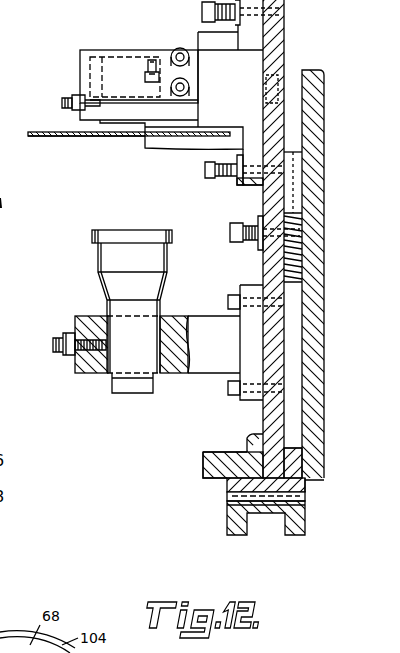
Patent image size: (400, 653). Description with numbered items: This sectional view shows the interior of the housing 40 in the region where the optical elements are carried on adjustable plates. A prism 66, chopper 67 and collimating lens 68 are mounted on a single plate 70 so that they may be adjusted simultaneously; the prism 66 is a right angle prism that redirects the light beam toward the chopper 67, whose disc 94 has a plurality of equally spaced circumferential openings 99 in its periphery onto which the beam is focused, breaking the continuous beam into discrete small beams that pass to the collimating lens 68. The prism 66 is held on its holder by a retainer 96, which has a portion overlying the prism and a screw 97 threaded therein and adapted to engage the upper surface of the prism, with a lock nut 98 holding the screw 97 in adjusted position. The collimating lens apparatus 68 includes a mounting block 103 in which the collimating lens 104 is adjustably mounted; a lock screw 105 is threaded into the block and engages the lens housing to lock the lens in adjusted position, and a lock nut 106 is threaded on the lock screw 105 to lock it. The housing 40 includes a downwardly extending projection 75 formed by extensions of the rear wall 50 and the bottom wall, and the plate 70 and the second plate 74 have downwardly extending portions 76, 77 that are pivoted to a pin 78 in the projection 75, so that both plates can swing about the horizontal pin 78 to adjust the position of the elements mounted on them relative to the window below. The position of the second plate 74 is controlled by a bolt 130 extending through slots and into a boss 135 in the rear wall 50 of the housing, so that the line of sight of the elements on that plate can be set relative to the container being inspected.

The housing 40 is at (326, 131).
The rear wall 50 is at (306, 238).
The prism 66 is at (122, 118).
The chopper 67 is at (92, 140).
The collimating lens 68 is at (92, 262).
The plate 70 is at (272, 408).
The second plate 74 is at (256, 446).
The projection 75 is at (230, 524).
The downwardly extending portion 76 is at (276, 479).
The downwardly extending portion 77 is at (252, 478).
The pin 78 is at (288, 505).
The disc 94 is at (60, 138).
The retainer 96 is at (96, 54).
The screw 97 is at (62, 101).
The lock nut 98 is at (78, 94).
The circumferential openings 99 is at (45, 132).
The mounting block 103 is at (198, 342).
The collimating lens 104 is at (140, 259).
The lock screw 105 is at (56, 340).
The lock nut 106 is at (72, 335).
The bolt 130 is at (236, 224).
The boss 135 is at (291, 185).